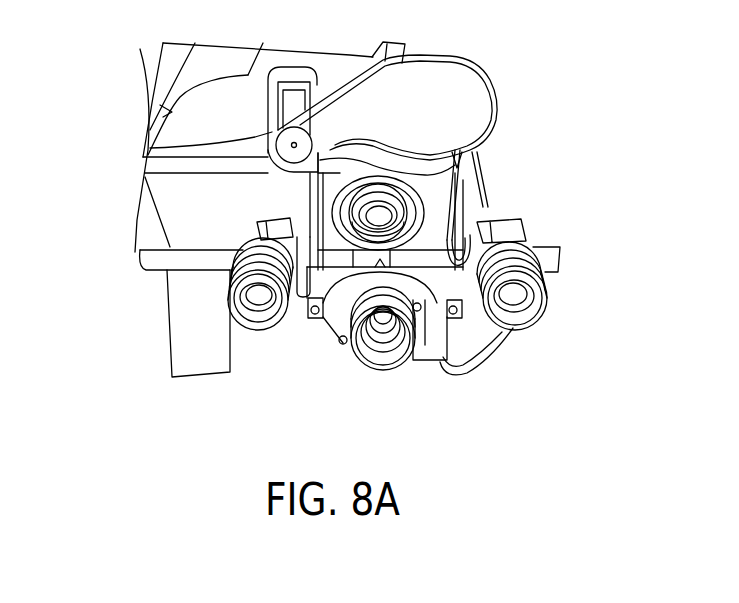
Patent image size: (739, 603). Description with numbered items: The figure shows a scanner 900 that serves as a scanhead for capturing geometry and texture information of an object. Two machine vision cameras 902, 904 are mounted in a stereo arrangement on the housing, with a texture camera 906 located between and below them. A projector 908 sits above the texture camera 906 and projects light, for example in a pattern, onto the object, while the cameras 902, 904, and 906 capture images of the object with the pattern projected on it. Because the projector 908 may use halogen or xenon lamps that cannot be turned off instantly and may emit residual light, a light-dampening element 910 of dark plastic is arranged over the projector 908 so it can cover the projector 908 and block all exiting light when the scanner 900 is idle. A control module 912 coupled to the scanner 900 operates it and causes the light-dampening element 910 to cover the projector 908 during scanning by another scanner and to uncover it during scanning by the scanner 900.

The scanner 900 is at (113, 100).
The machine vision camera 902 is at (261, 342).
The machine vision camera 904 is at (560, 296).
The texture camera 906 is at (404, 382).
The projector 908 is at (420, 209).
The light-dampening element 910 is at (497, 89).
The control module 912 is at (135, 205).